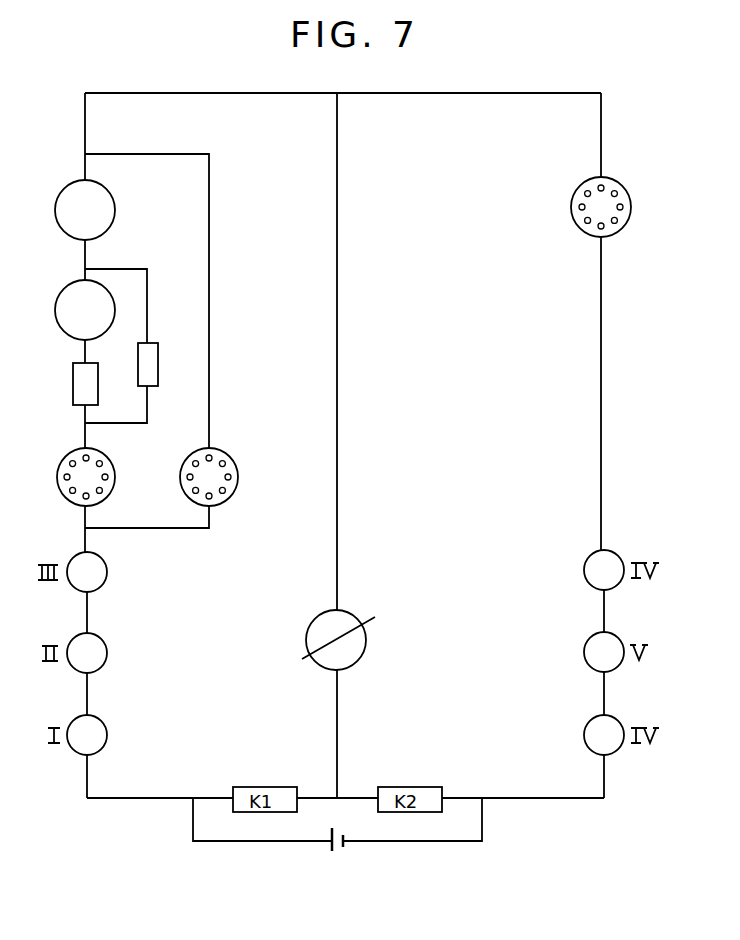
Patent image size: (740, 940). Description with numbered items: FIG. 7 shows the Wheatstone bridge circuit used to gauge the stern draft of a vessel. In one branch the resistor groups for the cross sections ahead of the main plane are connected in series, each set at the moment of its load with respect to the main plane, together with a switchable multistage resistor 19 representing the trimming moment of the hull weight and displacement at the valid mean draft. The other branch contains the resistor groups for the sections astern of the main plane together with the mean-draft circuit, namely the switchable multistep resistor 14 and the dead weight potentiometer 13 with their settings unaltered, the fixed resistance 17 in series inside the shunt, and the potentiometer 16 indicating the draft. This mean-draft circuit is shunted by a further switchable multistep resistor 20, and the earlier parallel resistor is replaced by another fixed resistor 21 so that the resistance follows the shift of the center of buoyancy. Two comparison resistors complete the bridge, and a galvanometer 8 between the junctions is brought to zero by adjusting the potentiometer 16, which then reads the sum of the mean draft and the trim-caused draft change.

The galvanometer 8 is at (336, 620).
The dead weight potentiometer 13 is at (103, 308).
The switchable multistep resistor 14 is at (106, 490).
The potentiometer indicating the draft 16 is at (108, 210).
The fixed resistance 17 is at (93, 385).
The switchable multistage resistor 19 is at (575, 197).
The shunt multistep resistor 20 is at (230, 490).
The fixed resistor 21 is at (152, 367).